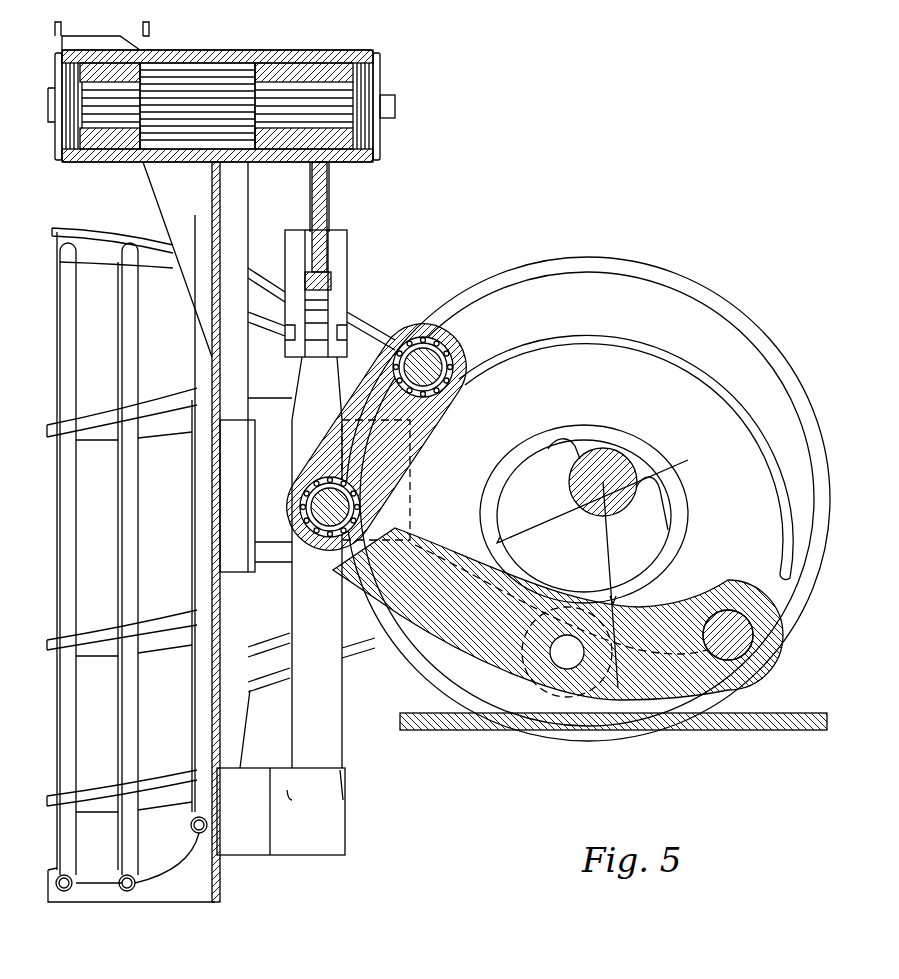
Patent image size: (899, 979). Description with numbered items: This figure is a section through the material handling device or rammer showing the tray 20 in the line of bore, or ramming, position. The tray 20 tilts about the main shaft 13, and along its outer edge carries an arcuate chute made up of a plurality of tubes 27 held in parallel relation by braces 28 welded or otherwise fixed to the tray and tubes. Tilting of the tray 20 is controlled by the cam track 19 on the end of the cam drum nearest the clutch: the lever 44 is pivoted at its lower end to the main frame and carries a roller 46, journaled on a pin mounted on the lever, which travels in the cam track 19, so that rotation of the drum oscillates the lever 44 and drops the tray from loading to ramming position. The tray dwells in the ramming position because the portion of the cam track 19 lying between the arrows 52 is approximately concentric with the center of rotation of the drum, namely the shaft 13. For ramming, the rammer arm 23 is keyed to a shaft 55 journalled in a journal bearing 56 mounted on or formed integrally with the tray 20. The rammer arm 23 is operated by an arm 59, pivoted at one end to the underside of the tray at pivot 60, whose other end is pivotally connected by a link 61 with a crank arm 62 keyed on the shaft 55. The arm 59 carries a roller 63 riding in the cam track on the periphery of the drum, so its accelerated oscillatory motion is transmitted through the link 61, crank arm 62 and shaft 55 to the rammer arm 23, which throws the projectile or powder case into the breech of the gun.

The main shaft 13 is at (620, 472).
The cam track 19 is at (658, 380).
The tray 20 is at (208, 853).
The rammer arm 23 is at (104, 162).
The tubes 27 is at (135, 727).
The braces 28 is at (157, 635).
The lever 44 is at (452, 657).
The roller 46 is at (568, 690).
The arrows 52 is at (608, 562).
The shaft 55 is at (240, 66).
The journal bearing 56 is at (200, 60).
The arm 59 is at (330, 683).
The pivot 60 is at (275, 828).
The link 61 is at (340, 295).
The crank arm 62 is at (327, 198).
The roller 63 is at (423, 432).